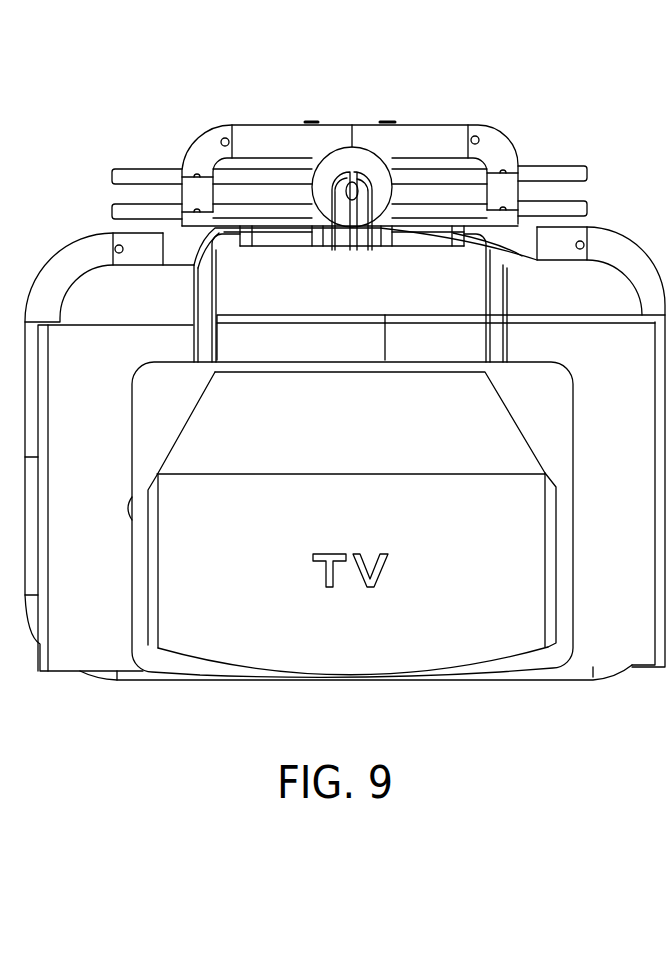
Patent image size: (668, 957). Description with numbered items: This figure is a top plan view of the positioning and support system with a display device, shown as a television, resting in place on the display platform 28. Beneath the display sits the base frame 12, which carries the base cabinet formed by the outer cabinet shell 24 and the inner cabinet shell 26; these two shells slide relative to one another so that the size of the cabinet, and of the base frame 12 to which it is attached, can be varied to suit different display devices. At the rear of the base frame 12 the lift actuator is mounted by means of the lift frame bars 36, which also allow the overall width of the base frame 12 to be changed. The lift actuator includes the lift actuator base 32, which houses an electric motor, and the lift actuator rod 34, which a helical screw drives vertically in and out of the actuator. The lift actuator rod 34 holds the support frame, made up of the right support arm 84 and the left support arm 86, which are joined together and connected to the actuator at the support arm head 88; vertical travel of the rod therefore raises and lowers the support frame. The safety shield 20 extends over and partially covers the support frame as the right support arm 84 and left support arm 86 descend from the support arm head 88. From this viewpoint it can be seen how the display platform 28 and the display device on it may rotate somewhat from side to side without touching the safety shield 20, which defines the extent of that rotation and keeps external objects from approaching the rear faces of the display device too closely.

The base frame 12 is at (47, 283).
The safety shield 20 is at (267, 233).
The outer cabinet shell 24 is at (631, 466).
The inner cabinet shell 26 is at (95, 476).
The display platform 28 is at (552, 411).
The lift actuator base 32 is at (365, 167).
The lift actuator rod 34 is at (350, 177).
The lift frame bars 36 is at (545, 175).
The right support arm 84 is at (495, 281).
The left support arm 86 is at (203, 290).
The support arm head 88 is at (338, 193).